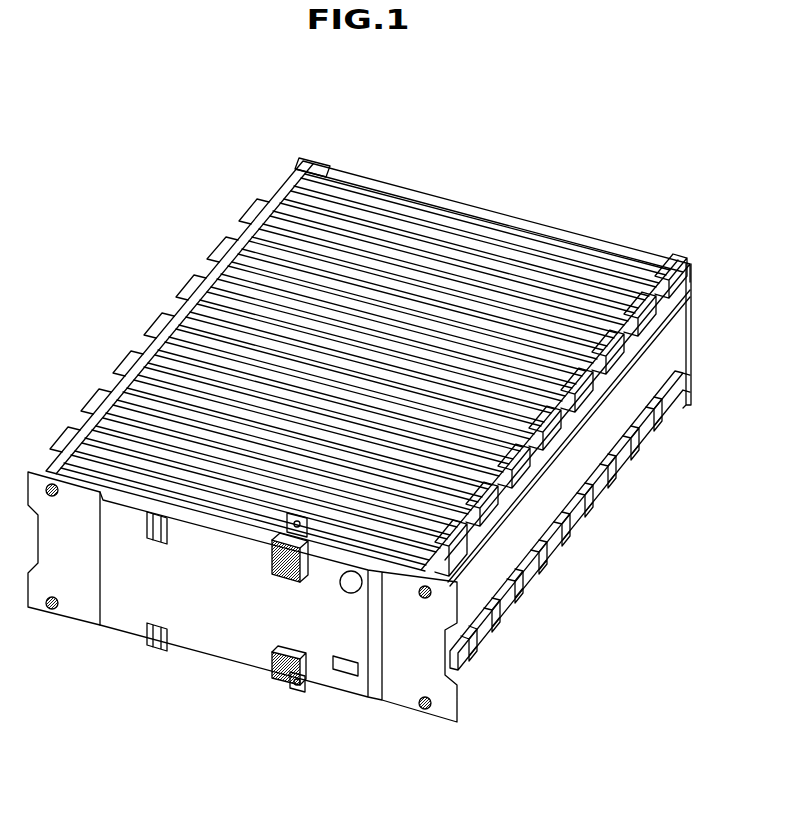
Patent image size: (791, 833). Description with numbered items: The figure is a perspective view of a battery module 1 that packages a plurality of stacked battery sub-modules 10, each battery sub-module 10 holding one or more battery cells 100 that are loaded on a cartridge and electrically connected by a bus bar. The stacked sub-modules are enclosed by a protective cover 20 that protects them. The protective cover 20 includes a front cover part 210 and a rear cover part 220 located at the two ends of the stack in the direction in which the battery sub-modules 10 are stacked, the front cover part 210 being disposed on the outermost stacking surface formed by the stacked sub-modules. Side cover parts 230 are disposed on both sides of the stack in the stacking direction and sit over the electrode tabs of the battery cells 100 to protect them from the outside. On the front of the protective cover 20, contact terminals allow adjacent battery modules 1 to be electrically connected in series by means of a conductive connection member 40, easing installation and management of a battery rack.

The battery module 1 is at (541, 86).
The battery sub-module 10 is at (270, 311).
The protective cover 20 is at (503, 569).
The conductive connection member 40 is at (284, 517).
The battery cell 100 is at (463, 212).
The front cover part 210 is at (205, 612).
The rear cover part 220 is at (530, 231).
The side cover part 230 is at (548, 505).